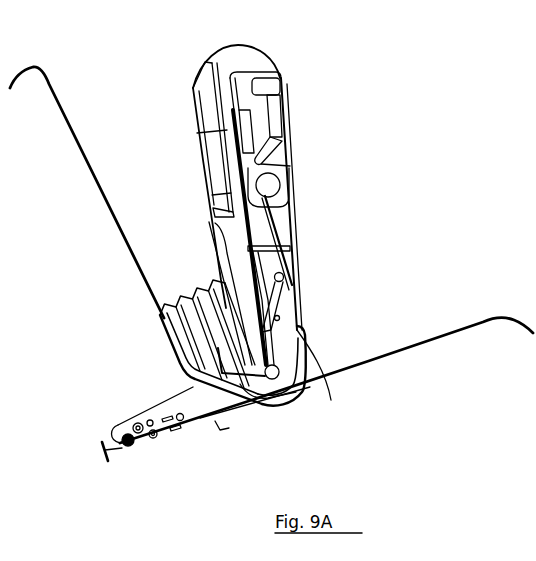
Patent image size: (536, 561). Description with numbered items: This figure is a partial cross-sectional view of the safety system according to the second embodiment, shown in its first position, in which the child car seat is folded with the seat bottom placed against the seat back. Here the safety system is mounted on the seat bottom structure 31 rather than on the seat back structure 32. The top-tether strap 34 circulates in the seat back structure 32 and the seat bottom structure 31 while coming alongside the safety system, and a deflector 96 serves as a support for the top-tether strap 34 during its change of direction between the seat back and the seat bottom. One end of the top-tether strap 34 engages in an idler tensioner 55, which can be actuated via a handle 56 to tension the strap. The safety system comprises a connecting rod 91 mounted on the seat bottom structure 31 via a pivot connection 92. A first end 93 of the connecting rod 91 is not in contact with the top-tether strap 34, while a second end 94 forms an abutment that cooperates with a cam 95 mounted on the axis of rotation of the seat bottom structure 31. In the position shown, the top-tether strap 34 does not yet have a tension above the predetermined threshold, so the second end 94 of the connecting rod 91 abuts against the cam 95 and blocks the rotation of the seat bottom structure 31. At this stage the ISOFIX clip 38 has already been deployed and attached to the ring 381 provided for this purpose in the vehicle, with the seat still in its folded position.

The seat bottom structure 31 is at (198, 97).
The handle 56 is at (272, 83).
The idler tensioner 55 is at (290, 166).
The top-tether strap 34 is at (283, 230).
The first end of the connecting rod 93 is at (284, 272).
The connecting rod 91 is at (292, 296).
The seat back structure 32 is at (175, 334).
The deflector 96 is at (190, 354).
The pivot connection 92 is at (297, 327).
The second end of the connecting rod 94 is at (305, 386).
The cam 95 is at (245, 388).
The ISOFIX clip 38 is at (179, 443).
The ring 381 is at (106, 466).